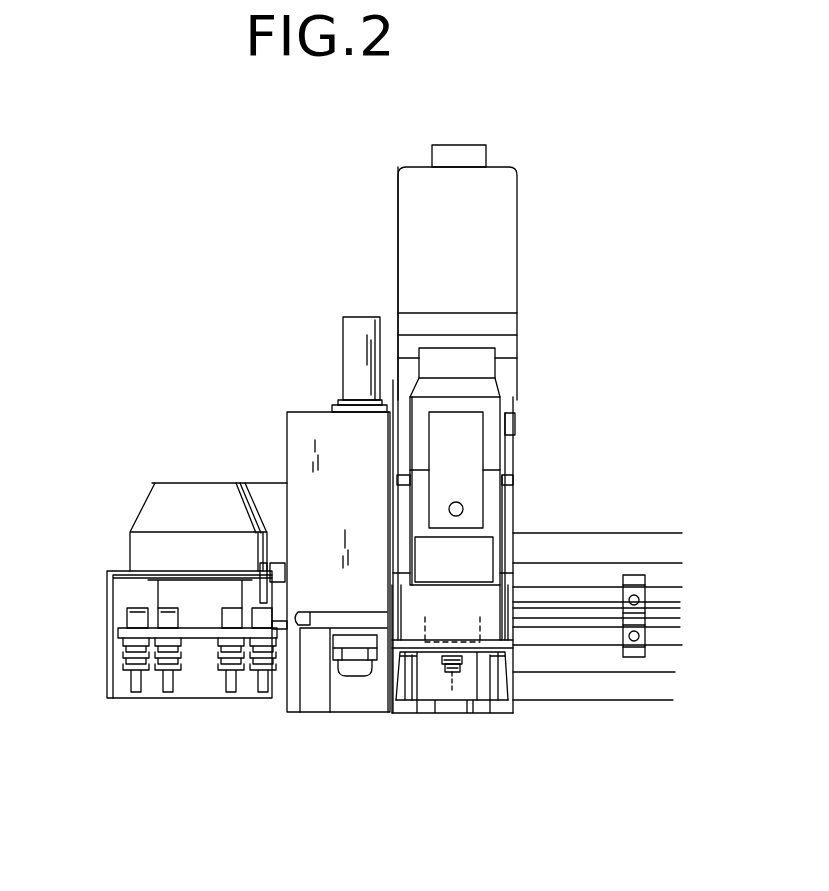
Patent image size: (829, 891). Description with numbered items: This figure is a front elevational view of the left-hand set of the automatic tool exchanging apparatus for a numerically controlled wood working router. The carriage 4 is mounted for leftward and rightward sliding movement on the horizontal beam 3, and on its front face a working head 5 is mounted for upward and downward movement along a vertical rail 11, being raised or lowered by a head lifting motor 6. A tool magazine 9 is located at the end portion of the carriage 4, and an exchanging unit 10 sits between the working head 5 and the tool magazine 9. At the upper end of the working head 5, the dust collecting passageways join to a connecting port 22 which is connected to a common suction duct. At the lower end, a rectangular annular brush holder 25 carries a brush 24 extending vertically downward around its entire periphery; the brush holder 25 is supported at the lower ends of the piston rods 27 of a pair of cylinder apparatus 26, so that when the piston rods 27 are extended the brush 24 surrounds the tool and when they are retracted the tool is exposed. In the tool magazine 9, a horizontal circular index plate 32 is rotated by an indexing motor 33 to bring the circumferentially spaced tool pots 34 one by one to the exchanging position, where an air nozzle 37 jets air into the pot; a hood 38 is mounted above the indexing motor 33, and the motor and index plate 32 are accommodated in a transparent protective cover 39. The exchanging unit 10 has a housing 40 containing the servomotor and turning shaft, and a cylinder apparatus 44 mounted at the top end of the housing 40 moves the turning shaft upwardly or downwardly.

The beam 3 is at (627, 530).
The carriage 4 is at (367, 712).
The working head 5 is at (506, 409).
The head lifting motor 6 is at (482, 206).
The tool magazine 9 is at (144, 495).
The exchanging unit 10 is at (302, 405).
The vertical rail 11 is at (427, 713).
The connecting port 22 is at (473, 360).
The brush 24 is at (508, 678).
The brush holder 25 is at (507, 647).
The cylinder apparatus 26 is at (402, 508).
The piston rod 27 is at (513, 585).
The index plate 32 is at (195, 690).
The indexing motor 33 is at (168, 598).
The tool pot 34 is at (167, 612).
The air nozzle 37 is at (310, 490).
The hood 38 is at (168, 553).
The transparent protective cover 39 is at (107, 657).
The housing 40 is at (267, 592).
The cylinder apparatus 44 is at (352, 343).